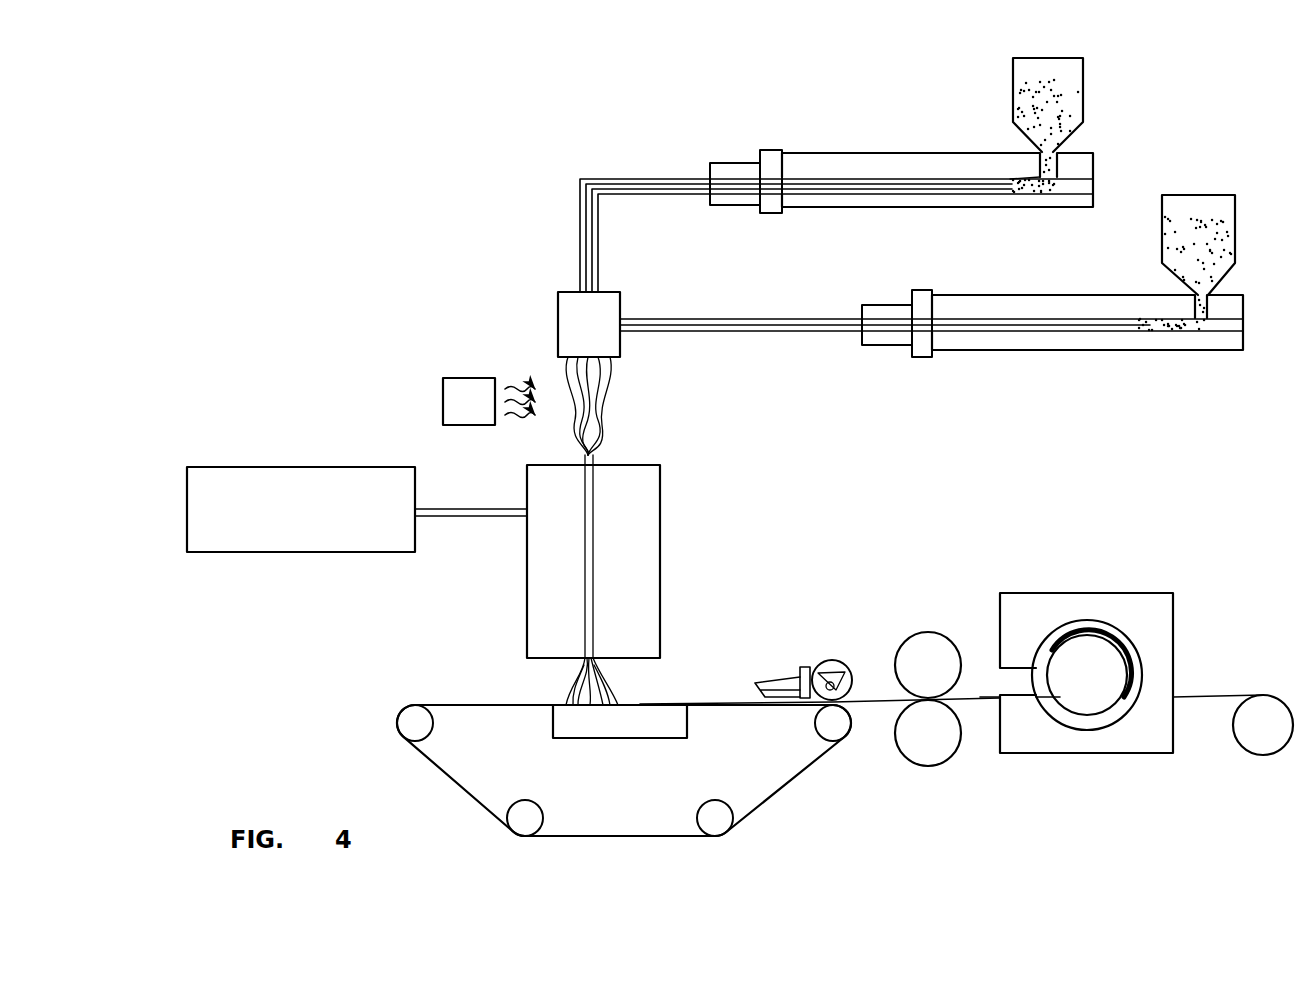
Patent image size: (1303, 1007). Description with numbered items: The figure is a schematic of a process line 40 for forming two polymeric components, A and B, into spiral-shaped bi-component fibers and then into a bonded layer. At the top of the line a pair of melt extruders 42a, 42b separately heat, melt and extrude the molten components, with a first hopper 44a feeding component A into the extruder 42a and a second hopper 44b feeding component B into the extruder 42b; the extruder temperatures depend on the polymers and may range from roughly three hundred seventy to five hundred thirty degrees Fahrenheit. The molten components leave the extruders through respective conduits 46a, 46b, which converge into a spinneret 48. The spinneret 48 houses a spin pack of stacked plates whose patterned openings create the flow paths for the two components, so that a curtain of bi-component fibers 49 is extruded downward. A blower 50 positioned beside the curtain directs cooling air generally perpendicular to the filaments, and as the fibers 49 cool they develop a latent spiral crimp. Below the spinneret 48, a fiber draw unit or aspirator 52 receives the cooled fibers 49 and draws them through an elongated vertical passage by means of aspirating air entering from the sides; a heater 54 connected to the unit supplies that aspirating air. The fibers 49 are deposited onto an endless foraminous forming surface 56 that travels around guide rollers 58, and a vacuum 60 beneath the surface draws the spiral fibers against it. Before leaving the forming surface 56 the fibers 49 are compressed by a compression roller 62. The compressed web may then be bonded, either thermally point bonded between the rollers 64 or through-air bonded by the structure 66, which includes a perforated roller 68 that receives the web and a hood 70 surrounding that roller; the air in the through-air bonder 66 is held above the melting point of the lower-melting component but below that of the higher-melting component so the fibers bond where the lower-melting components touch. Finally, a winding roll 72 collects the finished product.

The process line 40 is at (376, 140).
The melt extruder 42a is at (950, 293).
The melt extruder 42b is at (812, 150).
The first hopper 44a is at (1190, 195).
The second hopper 44b is at (1043, 57).
The conduit 46a is at (680, 319).
The conduit 46b is at (612, 178).
The spinneret 48 is at (603, 337).
The bi-component fibers 49 is at (605, 415).
The blower 50 is at (463, 385).
The fiber draw unit or aspirator 52 is at (658, 462).
The heater 54 is at (272, 463).
The endless foraminous forming surface 56 is at (627, 840).
The guide rollers 58 is at (433, 728).
The vacuum 60 is at (630, 740).
The compression roller 62 is at (835, 661).
The rollers 64 is at (920, 632).
The through-air bonder 66 is at (1114, 644).
The perforated roller 68 is at (1084, 710).
The hood 70 is at (1160, 622).
The winding roll 72 is at (1275, 757).